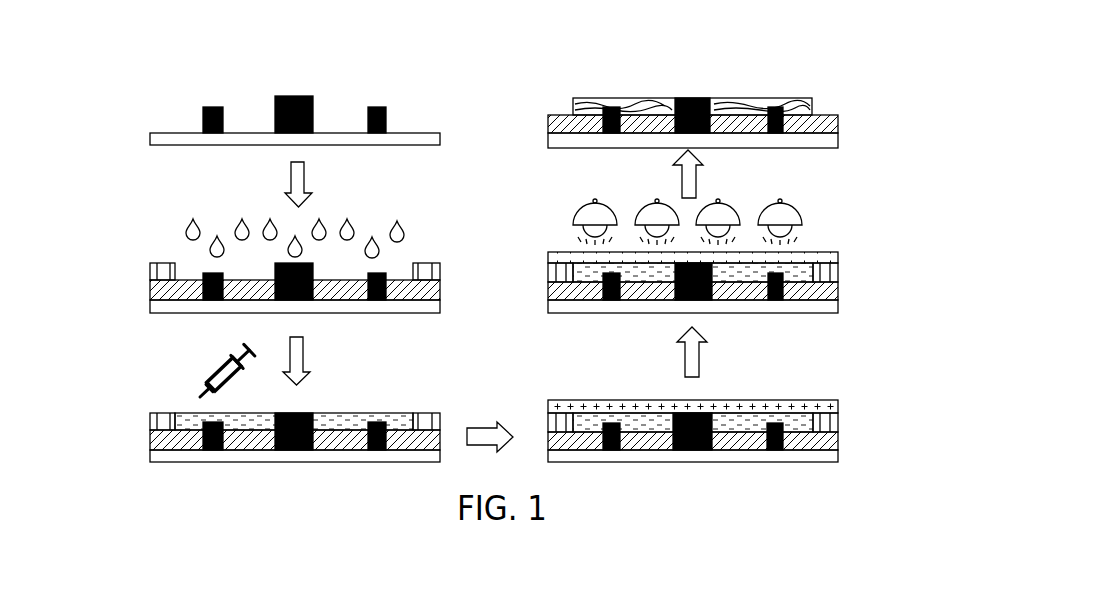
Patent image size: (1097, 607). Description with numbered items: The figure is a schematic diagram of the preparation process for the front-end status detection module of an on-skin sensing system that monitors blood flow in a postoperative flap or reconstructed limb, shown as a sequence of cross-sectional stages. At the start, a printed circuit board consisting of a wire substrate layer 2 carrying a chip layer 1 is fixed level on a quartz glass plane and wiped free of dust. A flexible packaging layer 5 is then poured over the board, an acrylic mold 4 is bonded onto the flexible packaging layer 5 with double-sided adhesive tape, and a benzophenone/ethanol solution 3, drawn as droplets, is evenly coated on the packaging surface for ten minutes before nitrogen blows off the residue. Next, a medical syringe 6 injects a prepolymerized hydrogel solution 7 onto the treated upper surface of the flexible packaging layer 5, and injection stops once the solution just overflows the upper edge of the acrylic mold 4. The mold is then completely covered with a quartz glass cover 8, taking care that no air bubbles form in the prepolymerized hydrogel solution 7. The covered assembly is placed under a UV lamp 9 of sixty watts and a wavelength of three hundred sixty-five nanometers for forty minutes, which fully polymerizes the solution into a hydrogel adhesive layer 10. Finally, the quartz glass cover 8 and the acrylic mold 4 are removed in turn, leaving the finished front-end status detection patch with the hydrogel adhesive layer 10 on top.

The chip layer 1 is at (203, 108).
The wire substrate layer of printed circuit board 2 is at (157, 137).
The benzophenone/ethanol solution 3 is at (188, 230).
The acrylic mold 4 is at (150, 273).
The flexible packaging layer 5 is at (150, 298).
The medical syringe 6 is at (203, 380).
The prepolymerized hydrogel solution 7 is at (150, 420).
The quartz glass cover 8 is at (828, 403).
The UV lamp 9 is at (813, 230).
The hydrogel adhesive layer 10 is at (812, 100).